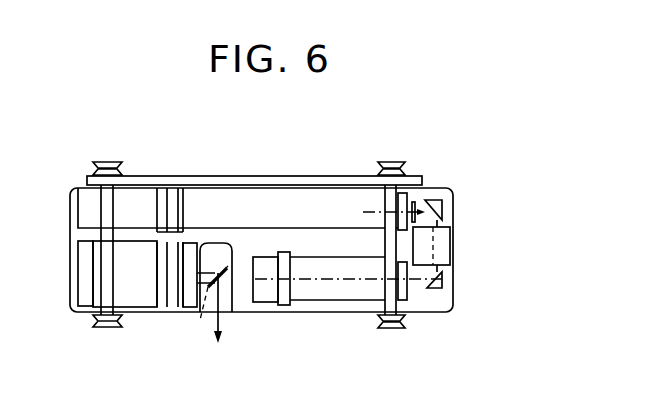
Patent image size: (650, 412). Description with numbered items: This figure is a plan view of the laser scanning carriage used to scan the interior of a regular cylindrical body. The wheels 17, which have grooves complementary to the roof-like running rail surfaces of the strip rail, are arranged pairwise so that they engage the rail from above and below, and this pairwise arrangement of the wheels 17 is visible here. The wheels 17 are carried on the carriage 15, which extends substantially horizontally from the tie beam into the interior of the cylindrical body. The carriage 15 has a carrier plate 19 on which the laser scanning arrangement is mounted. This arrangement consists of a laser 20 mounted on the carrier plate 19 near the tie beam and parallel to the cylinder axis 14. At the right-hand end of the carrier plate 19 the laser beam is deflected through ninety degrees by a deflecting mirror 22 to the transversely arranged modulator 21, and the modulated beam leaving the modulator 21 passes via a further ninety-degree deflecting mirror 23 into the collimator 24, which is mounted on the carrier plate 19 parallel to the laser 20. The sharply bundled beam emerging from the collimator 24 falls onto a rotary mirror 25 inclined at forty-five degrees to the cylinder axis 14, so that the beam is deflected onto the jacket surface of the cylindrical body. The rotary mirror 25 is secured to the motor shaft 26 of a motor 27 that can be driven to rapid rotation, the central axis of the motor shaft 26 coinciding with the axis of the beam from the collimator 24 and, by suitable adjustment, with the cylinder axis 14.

The cylinder axis 14 is at (210, 308).
The carriage 15 is at (259, 176).
The wheels 17 is at (105, 161).
The carrier plate 19 is at (70, 233).
The laser 20 is at (310, 202).
The modulator 21 is at (445, 238).
The upper prism 22 is at (442, 209).
The deflecting mirror 23 is at (446, 286).
The collimator 24 is at (327, 292).
The rotary mirror 25 is at (226, 270).
The motor shaft 26 is at (208, 263).
The motor 27 is at (140, 292).